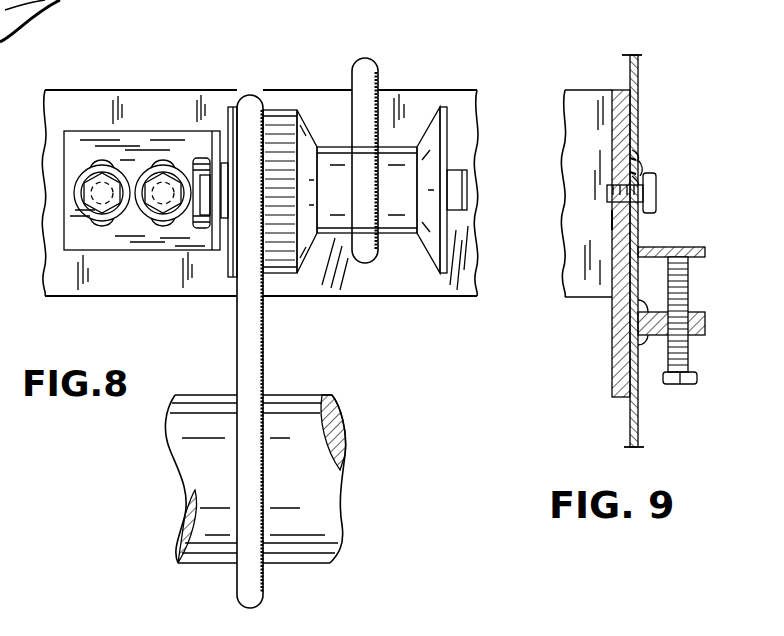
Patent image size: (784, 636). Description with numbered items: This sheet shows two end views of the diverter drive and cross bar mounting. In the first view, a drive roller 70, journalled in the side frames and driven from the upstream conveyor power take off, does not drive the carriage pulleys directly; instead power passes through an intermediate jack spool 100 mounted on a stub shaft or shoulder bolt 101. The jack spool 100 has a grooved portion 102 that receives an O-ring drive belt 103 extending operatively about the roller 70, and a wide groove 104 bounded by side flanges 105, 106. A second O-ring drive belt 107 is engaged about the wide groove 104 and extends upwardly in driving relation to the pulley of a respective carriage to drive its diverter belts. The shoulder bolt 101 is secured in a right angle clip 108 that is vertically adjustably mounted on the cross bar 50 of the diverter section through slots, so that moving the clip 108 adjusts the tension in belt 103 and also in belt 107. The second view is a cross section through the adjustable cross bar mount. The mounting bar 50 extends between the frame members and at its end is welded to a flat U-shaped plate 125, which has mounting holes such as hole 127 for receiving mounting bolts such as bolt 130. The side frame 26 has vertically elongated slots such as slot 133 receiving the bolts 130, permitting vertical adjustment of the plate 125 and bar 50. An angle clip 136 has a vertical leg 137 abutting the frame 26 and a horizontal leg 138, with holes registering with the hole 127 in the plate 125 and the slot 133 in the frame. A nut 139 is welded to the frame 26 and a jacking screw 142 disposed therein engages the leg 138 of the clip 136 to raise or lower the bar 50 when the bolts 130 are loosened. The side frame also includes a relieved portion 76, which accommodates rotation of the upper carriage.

In FIG. 9, the side frame 26 is at (626, 431).
In FIG. 8, the mounting bar 50 is at (106, 297).
In FIG. 9, the mounting bar 50 is at (582, 100).
In FIG. 8, the drive roller 70 is at (195, 448).
In FIG. 9, the relieved portion 76 is at (635, 72).
In FIG. 8, the jack spool 100 is at (377, 196).
In FIG. 8, the shoulder bolt 101 is at (455, 170).
In FIG. 8, the grooved portion 102 is at (248, 98).
In FIG. 8, the O-ring drive belt 103 is at (237, 349).
In FIG. 8, the wide groove 104 is at (403, 235).
In FIG. 8, the side flange 105 is at (308, 240).
In FIG. 8, the side flange 106 is at (440, 273).
In FIG. 8, the O-ring drive belt 107 is at (380, 73).
In FIG. 8, the right angle clip 108 is at (180, 143).
In FIG. 9, the U-shaped plate 125 is at (620, 317).
In FIG. 9, the mounting hole 127 is at (613, 220).
In FIG. 9, the mounting bolt 130 is at (657, 188).
In FIG. 9, the vertically elongated slot 133 is at (632, 172).
In FIG. 9, the angle clip 136 is at (652, 152).
In FIG. 9, the vertical leg 137 is at (632, 158).
In FIG. 9, the horizontal leg 138 is at (703, 246).
In FIG. 9, the nut 139 is at (657, 325).
In FIG. 9, the jacking screw 142 is at (681, 385).